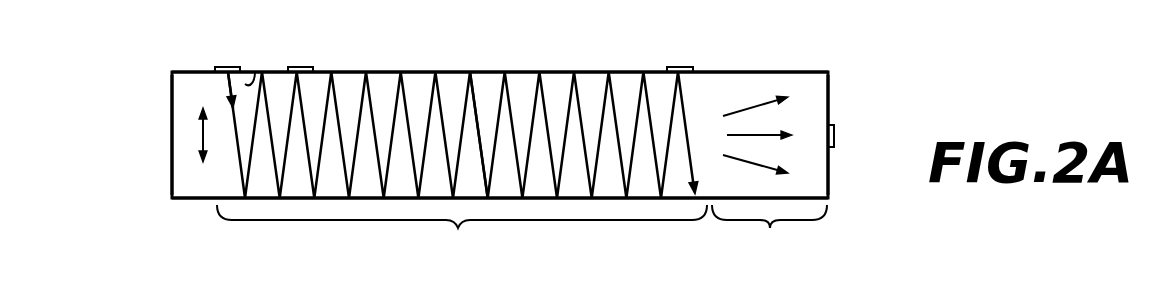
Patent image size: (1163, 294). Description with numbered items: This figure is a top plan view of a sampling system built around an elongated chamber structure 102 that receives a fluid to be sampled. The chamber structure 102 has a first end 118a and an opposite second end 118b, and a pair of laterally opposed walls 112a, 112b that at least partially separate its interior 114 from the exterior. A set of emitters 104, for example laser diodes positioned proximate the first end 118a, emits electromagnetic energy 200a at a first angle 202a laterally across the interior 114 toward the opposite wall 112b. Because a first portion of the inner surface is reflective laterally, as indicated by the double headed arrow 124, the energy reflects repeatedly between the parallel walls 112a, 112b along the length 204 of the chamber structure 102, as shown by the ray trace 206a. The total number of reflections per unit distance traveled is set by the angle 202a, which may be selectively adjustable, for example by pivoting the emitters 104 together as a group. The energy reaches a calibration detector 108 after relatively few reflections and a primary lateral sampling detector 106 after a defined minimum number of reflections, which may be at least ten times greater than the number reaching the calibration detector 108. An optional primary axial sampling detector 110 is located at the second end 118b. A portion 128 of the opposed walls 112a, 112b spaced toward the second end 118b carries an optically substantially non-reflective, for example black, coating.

The chamber structure 102 is at (172, 143).
The emitters 104 is at (228, 68).
The primary lateral sampling detector 106 is at (690, 67).
The calibration detector 108 is at (303, 67).
The primary axial sampling detector 110 is at (834, 135).
The wall 112a is at (388, 72).
The wall 112b is at (193, 200).
The interior 114 is at (487, 91).
The first end 118a is at (158, 211).
The second end 118b is at (837, 219).
The double headed arrow 124 is at (199, 134).
The portion 128 is at (769, 180).
The electromagnetic energy 200a is at (244, 78).
The first angle 202a is at (255, 72).
The length 204 is at (462, 234).
The ray trace 206a is at (597, 168).